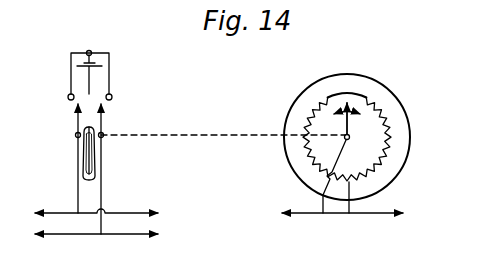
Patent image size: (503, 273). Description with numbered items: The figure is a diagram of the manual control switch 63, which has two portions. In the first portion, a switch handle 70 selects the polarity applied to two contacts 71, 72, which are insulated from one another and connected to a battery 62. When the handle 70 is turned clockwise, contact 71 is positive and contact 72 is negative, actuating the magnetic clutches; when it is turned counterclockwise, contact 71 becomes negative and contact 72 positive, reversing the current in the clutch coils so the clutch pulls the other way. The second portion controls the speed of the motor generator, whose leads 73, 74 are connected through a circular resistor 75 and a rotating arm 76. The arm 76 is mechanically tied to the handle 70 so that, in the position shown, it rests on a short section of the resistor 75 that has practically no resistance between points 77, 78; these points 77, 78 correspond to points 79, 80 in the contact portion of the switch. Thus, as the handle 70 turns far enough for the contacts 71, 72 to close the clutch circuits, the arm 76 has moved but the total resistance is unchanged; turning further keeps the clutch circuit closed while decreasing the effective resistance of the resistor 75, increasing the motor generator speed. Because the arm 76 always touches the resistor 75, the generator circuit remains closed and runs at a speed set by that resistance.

The battery 62 is at (96, 62).
The manual control switch 63 is at (131, 84).
The switch handle 70 is at (95, 172).
The contact 71 is at (78, 118).
The contact 72 is at (101, 118).
The lead 73 is at (297, 213).
The lead 74 is at (370, 213).
The circular resistor 75 is at (382, 156).
The rotating arm 76 is at (345, 122).
The point 77 is at (327, 97).
The point 78 is at (367, 95).
The point 79 is at (68, 97).
The point 80 is at (112, 97).